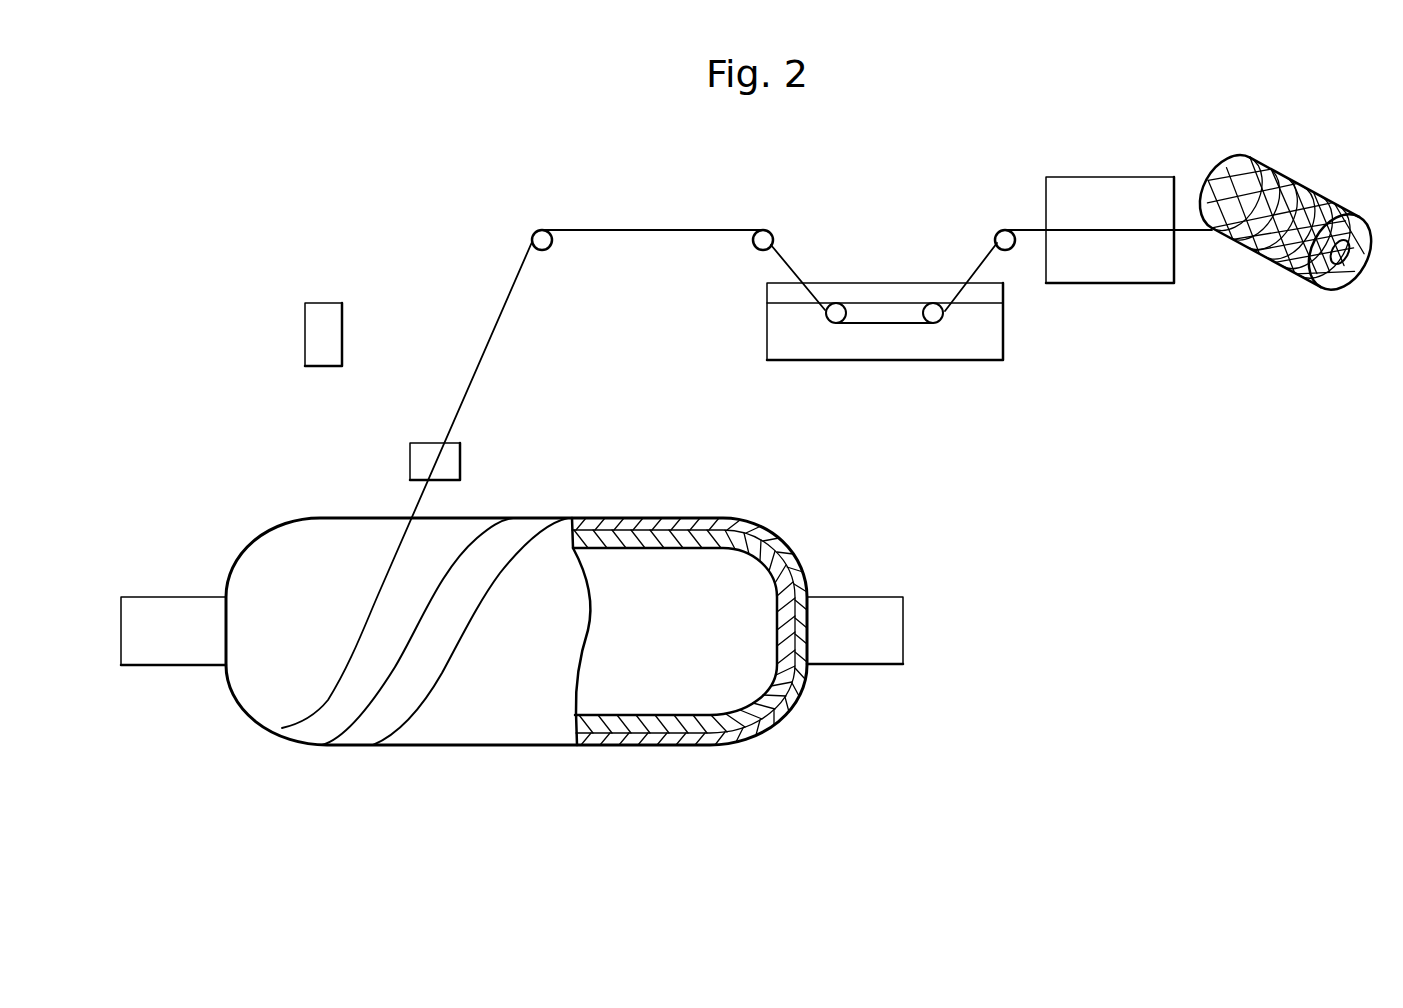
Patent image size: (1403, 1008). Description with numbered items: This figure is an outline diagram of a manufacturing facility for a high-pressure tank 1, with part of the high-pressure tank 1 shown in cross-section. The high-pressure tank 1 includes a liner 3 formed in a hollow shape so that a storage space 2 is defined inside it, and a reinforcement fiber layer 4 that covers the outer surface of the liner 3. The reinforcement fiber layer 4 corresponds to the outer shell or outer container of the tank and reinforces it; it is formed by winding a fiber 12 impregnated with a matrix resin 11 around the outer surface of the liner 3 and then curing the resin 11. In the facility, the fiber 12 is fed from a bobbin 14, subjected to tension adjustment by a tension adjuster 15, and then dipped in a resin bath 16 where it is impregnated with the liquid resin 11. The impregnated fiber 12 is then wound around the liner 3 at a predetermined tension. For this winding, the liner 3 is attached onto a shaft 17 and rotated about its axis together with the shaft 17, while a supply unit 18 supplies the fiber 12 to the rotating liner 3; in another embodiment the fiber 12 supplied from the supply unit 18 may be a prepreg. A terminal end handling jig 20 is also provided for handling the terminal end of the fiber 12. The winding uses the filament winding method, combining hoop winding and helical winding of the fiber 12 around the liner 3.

The high-pressure tank 1 is at (493, 511).
The storage space 2 is at (689, 698).
The liner 3 is at (623, 743).
The reinforcement fiber layer 4 is at (510, 747).
The matrix resin 11 is at (915, 350).
The fiber 12 is at (510, 300).
The bobbin 14 is at (1295, 273).
The tension adjuster 15 is at (1132, 285).
The resin bath 16 is at (982, 362).
The shaft 17 is at (183, 652).
The supply unit 18 is at (410, 462).
The terminal end handling jig 20 is at (304, 333).